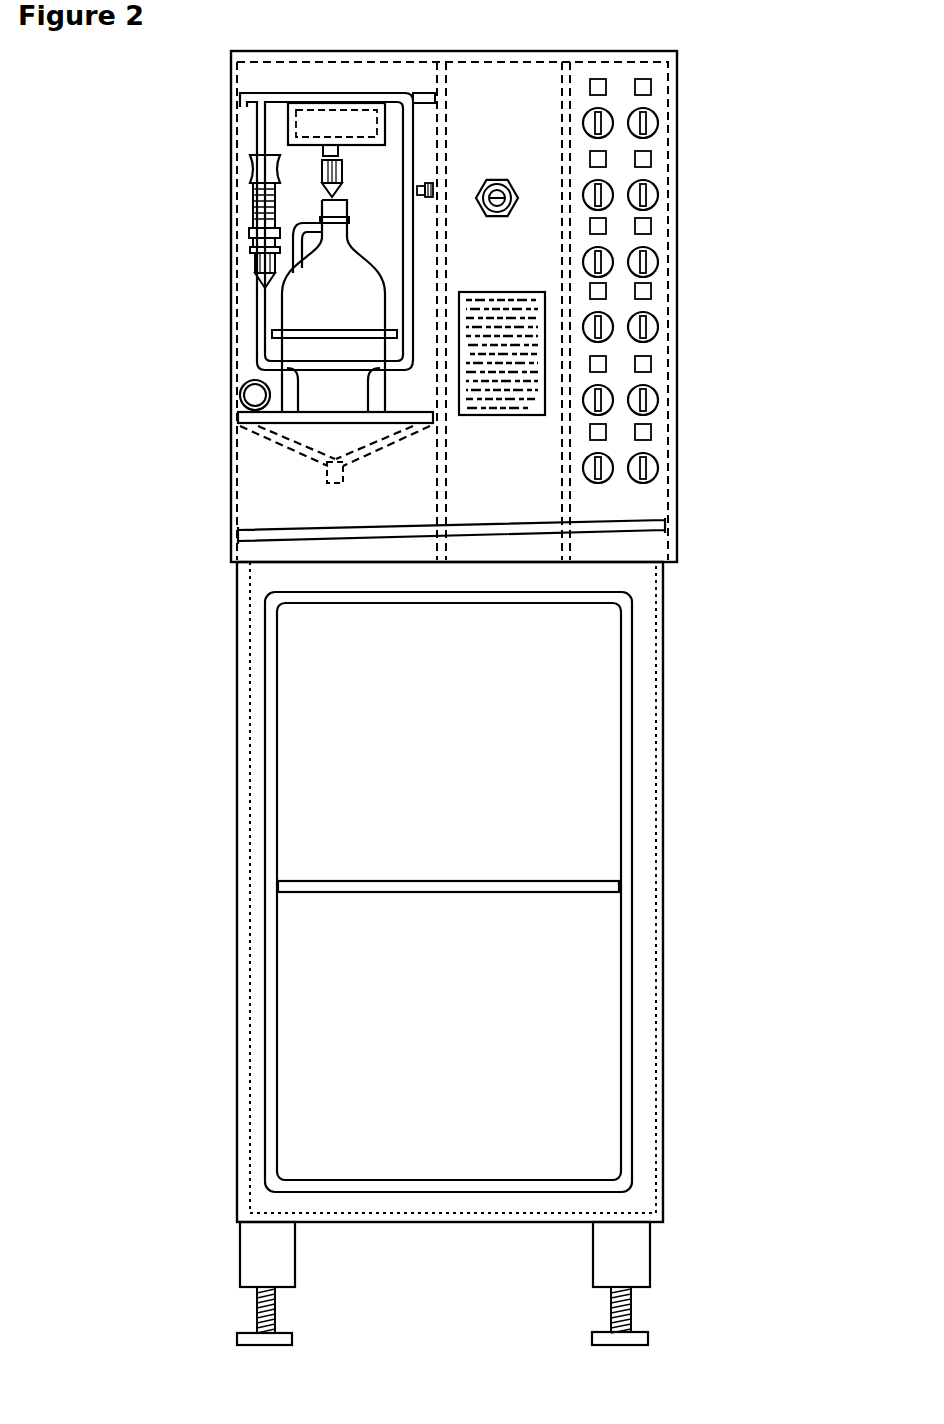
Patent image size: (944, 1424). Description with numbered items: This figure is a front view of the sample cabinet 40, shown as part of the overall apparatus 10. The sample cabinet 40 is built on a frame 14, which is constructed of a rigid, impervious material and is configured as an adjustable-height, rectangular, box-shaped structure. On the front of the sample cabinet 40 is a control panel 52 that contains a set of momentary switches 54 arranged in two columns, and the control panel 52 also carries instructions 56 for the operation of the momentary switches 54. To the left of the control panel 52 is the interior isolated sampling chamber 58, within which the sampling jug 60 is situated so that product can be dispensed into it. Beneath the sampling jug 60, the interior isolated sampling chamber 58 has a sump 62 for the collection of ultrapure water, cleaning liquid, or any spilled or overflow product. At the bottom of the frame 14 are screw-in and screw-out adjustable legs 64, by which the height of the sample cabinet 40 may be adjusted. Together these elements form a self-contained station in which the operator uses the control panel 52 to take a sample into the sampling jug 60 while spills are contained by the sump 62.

The beverage dispensing apparatus 10 is at (205, 707).
The frame 14 is at (665, 852).
The sample cabinet 40 is at (722, 690).
The control panel 52 is at (643, 73).
The momentary switches 54 is at (657, 197).
The instructions 56 is at (487, 415).
The interior isolated sampling chamber 58 is at (384, 200).
The sampling jug 60 is at (317, 302).
The sump 62 is at (263, 437).
The adjustable legs 64 is at (592, 1338).